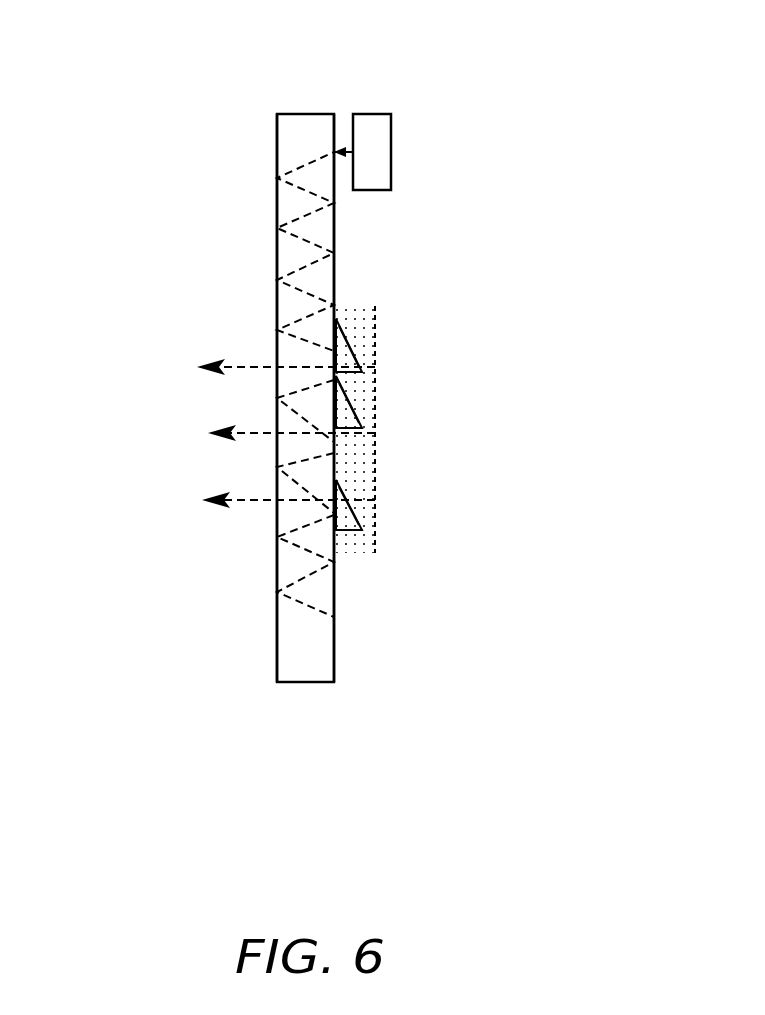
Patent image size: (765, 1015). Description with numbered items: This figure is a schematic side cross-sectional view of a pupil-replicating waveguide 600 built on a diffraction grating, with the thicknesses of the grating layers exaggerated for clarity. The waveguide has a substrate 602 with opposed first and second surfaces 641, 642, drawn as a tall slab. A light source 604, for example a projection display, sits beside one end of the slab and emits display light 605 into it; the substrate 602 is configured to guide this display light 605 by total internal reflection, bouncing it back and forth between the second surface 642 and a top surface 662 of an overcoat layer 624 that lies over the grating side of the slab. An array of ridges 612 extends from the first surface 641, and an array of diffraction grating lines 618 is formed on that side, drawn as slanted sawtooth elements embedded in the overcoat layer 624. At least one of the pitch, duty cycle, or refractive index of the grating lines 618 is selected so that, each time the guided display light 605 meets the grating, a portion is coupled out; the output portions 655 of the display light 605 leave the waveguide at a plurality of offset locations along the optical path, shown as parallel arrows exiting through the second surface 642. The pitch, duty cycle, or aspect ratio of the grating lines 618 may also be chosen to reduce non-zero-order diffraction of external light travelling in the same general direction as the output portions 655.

The pupil-replicating waveguide 600 is at (128, 232).
The substrate 602 is at (277, 134).
The light source 604 is at (371, 114).
The display light 605 is at (277, 197).
The portions of the display light 655 is at (239, 362).
The overcoat layer 624 is at (375, 316).
The diffraction grating lines 618 is at (375, 345).
The ridges 612 is at (375, 462).
The top surface of the overcoat layer 662 is at (375, 530).
The second surface 642 is at (277, 659).
The first surface 641 is at (334, 659).